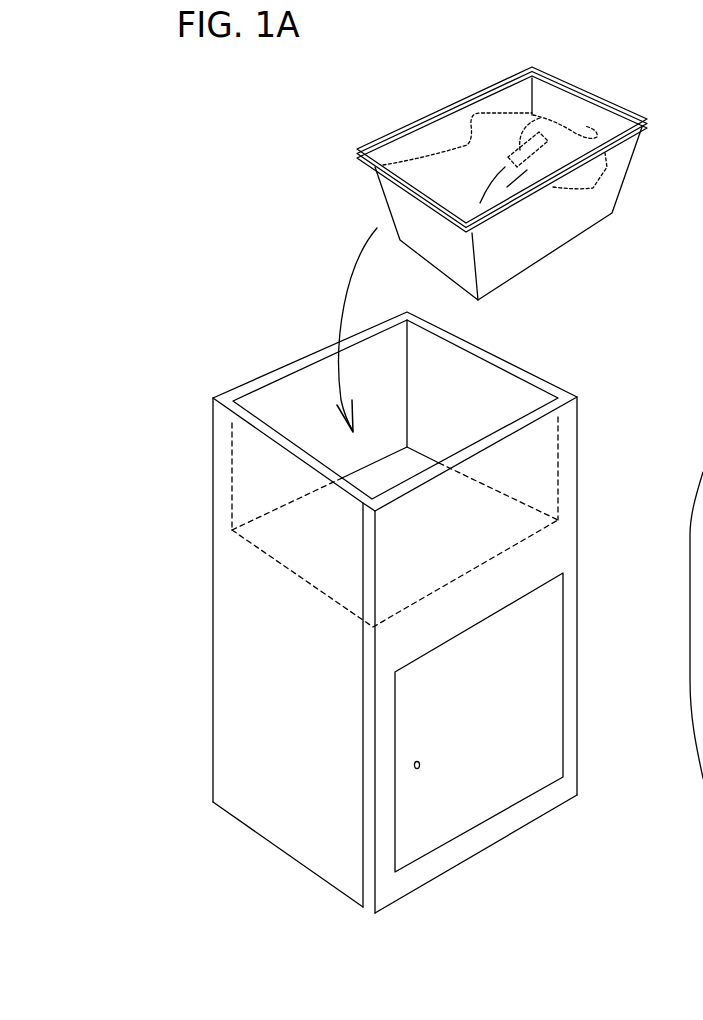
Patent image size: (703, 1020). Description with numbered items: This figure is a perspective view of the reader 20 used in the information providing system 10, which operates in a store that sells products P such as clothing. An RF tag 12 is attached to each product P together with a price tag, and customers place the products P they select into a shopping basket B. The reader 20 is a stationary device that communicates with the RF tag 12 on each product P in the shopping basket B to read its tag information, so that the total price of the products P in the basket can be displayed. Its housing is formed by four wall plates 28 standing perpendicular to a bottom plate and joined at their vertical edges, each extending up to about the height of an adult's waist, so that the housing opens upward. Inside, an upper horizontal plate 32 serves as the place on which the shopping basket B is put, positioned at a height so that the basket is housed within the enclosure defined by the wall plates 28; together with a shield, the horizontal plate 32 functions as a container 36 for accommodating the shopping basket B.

The information providing system 10 is at (240, 221).
The shopping basket B is at (647, 114).
The product P is at (465, 150).
The RF tag 12 is at (538, 118).
The reader 20 is at (640, 340).
The wall plate 28 is at (302, 358).
The horizontal plate 32 is at (396, 473).
The container 36 is at (592, 466).